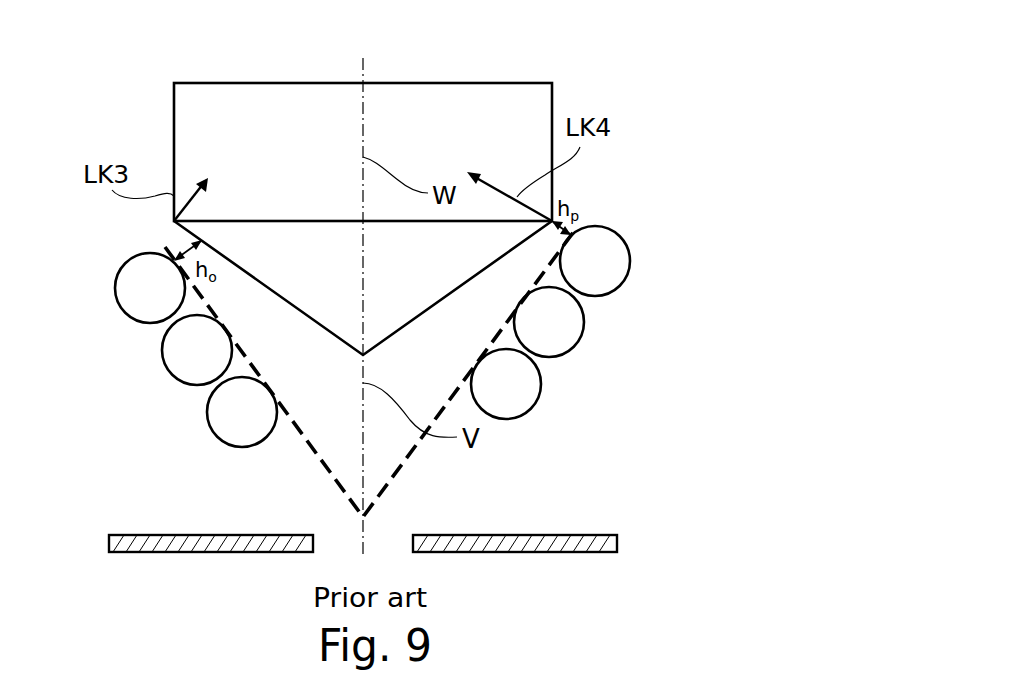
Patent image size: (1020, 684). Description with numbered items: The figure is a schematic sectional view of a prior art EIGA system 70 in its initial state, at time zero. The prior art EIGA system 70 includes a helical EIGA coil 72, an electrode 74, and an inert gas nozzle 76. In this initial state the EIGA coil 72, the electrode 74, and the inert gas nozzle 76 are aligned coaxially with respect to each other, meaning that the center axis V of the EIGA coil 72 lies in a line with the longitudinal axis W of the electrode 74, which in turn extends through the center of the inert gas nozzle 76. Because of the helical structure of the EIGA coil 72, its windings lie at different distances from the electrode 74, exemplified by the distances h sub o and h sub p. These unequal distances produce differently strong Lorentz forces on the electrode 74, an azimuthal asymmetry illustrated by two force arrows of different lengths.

The prior art EIGA system 70 is at (102, 88).
The helical EIGA coil 72 is at (122, 394).
The electrode 74 is at (393, 106).
The inert gas nozzle 76 is at (604, 543).